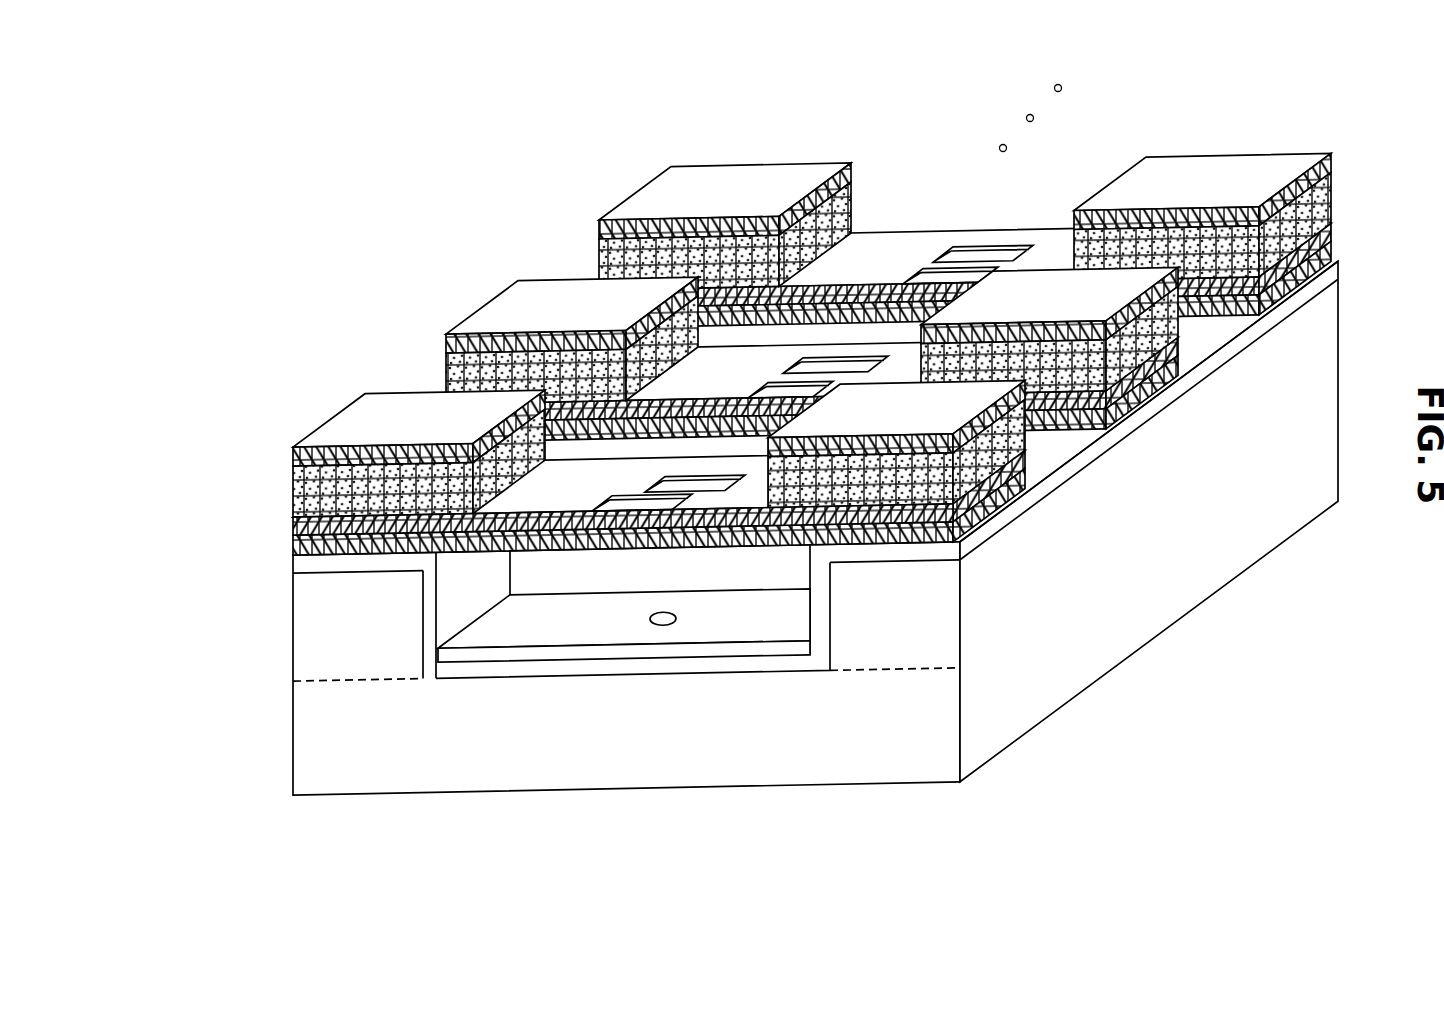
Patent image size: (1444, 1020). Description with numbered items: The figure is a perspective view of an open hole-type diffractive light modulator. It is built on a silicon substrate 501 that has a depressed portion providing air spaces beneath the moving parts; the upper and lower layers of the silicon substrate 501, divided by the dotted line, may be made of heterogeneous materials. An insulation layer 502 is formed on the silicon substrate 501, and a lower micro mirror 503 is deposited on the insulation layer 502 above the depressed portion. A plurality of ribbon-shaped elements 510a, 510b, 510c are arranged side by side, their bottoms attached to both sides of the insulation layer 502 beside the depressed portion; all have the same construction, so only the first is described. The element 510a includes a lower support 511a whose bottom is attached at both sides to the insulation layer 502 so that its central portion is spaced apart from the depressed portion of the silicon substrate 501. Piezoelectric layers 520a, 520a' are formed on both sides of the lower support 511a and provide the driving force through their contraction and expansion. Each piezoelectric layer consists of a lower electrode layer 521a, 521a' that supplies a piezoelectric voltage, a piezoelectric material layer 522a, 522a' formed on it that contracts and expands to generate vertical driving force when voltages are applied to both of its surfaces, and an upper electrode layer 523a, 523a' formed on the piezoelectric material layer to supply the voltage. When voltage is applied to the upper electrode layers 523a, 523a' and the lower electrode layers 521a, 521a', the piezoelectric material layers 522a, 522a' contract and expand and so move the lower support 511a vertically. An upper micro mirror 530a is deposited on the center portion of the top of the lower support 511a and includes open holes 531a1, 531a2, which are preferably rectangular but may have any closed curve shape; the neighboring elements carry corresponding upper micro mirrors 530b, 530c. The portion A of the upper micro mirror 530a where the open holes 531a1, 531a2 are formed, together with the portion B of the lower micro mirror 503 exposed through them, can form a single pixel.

The silicon substrate 501 is at (887, 768).
The insulation layer 502 is at (793, 667).
The lower micro mirror 503 is at (626, 710).
The element 510a is at (714, 516).
The element 510b is at (775, 308).
The element 510c is at (928, 202).
The lower support 511a is at (293, 551).
The piezoelectric layer 520a is at (550, 391).
The lower electrode layer 521a is at (567, 440).
The piezoelectric material layer 522a is at (340, 413).
The upper electrode layer 523a is at (358, 370).
The piezoelectric layer 520a' is at (1044, 579).
The lower electrode layer 521a' is at (1072, 603).
The piezoelectric material layer 522a' is at (1006, 555).
The upper electrode layer 523a' is at (1027, 526).
The upper micro mirror 530a is at (520, 512).
The upper micro mirror 530b is at (670, 455).
The upper micro mirror 530c is at (850, 268).
The open hole 531a1 is at (613, 510).
The open hole 531a2 is at (726, 492).
The portion of the upper micro mirror A is at (629, 517).
The portion of the lower micro mirror B is at (658, 624).